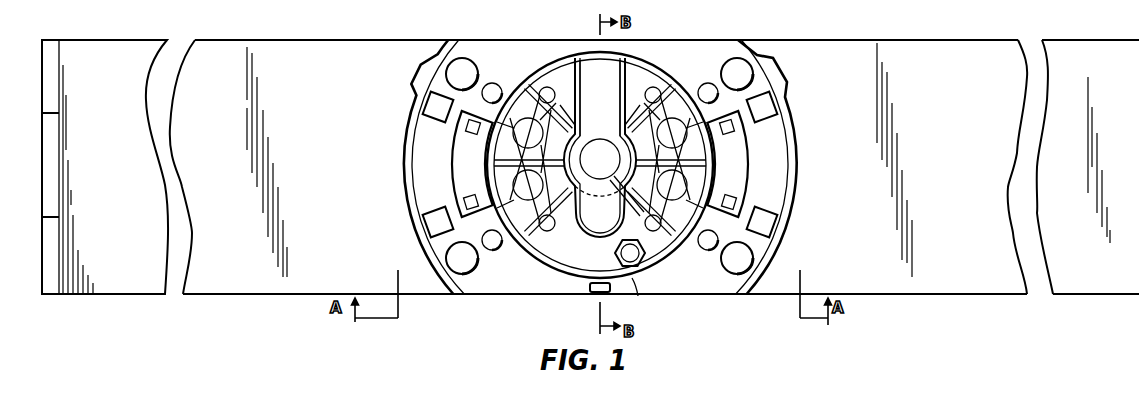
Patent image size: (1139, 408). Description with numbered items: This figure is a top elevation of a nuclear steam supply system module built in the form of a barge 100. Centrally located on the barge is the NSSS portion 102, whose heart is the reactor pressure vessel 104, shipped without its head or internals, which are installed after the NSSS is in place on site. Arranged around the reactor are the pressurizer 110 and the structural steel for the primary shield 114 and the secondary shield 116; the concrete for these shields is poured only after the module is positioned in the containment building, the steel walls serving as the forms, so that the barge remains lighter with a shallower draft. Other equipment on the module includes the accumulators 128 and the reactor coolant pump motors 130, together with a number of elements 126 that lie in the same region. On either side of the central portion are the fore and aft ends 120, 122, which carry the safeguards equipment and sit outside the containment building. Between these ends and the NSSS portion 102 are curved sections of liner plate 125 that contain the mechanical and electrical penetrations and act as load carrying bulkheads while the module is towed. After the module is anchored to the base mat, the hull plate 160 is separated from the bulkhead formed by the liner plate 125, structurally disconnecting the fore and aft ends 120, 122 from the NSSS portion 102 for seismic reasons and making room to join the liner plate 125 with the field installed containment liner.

The barge 100 is at (118, 295).
The NSSS portion 102 is at (528, 302).
The reactor pressure vessel 104 is at (603, 128).
The pressurizer 110 is at (615, 257).
The primary shield 114 is at (590, 233).
The secondary shield 116 is at (635, 298).
The fore end 120 is at (1067, 298).
The aft end 122 is at (225, 295).
The liner plate 125 is at (415, 143).
The large bolts 126 is at (723, 62).
The accumulators 128 is at (702, 80).
The reactor coolant pump motors 130 is at (770, 107).
The hull plate 160 is at (303, 295).